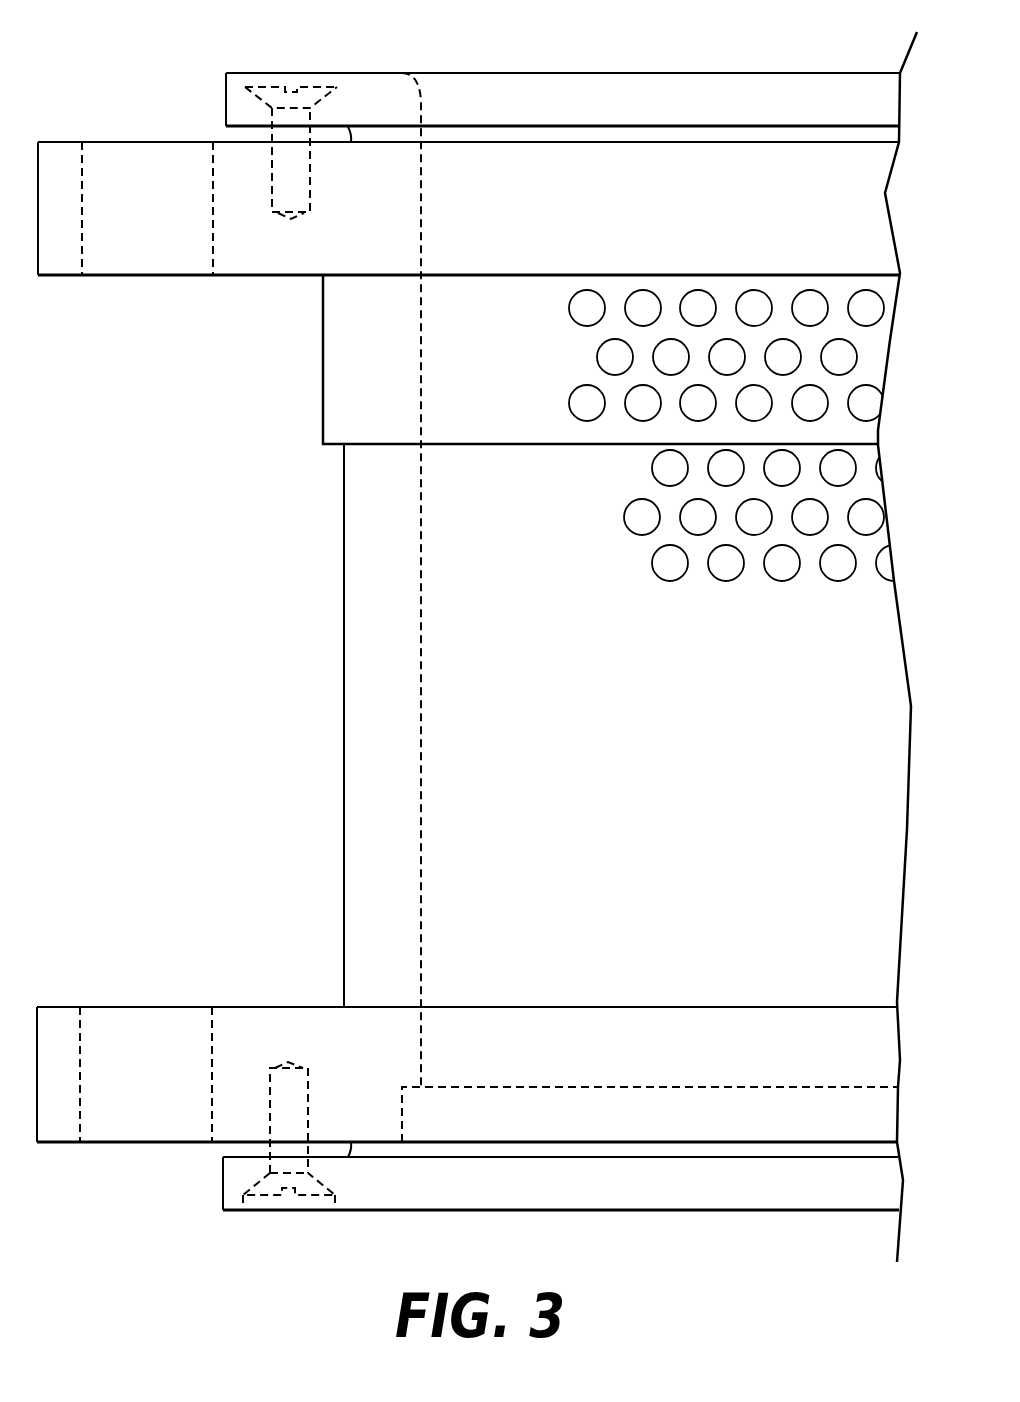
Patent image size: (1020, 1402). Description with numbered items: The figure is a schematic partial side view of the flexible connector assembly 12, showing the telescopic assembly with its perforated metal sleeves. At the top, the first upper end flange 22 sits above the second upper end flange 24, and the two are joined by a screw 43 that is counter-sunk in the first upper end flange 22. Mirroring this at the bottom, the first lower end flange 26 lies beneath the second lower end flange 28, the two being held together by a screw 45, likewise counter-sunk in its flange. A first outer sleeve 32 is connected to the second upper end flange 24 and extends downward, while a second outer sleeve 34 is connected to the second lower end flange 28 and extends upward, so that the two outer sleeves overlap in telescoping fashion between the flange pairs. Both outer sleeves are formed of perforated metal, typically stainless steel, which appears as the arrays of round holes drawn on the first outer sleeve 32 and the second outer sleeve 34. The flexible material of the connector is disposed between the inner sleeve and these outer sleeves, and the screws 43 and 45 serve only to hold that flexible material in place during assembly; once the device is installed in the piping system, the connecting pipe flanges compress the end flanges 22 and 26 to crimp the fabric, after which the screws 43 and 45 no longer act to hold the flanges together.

The flexible connector assembly 12 is at (332, 686).
The first upper end flange 22 is at (226, 88).
The second upper end flange 24 is at (250, 278).
The first lower end flange 26 is at (223, 1193).
The second lower end flange 28 is at (236, 1007).
The first outer sleeve 32 is at (323, 405).
The second outer sleeve 34 is at (344, 572).
The screw 43 is at (317, 87).
The screw 45 is at (315, 1212).